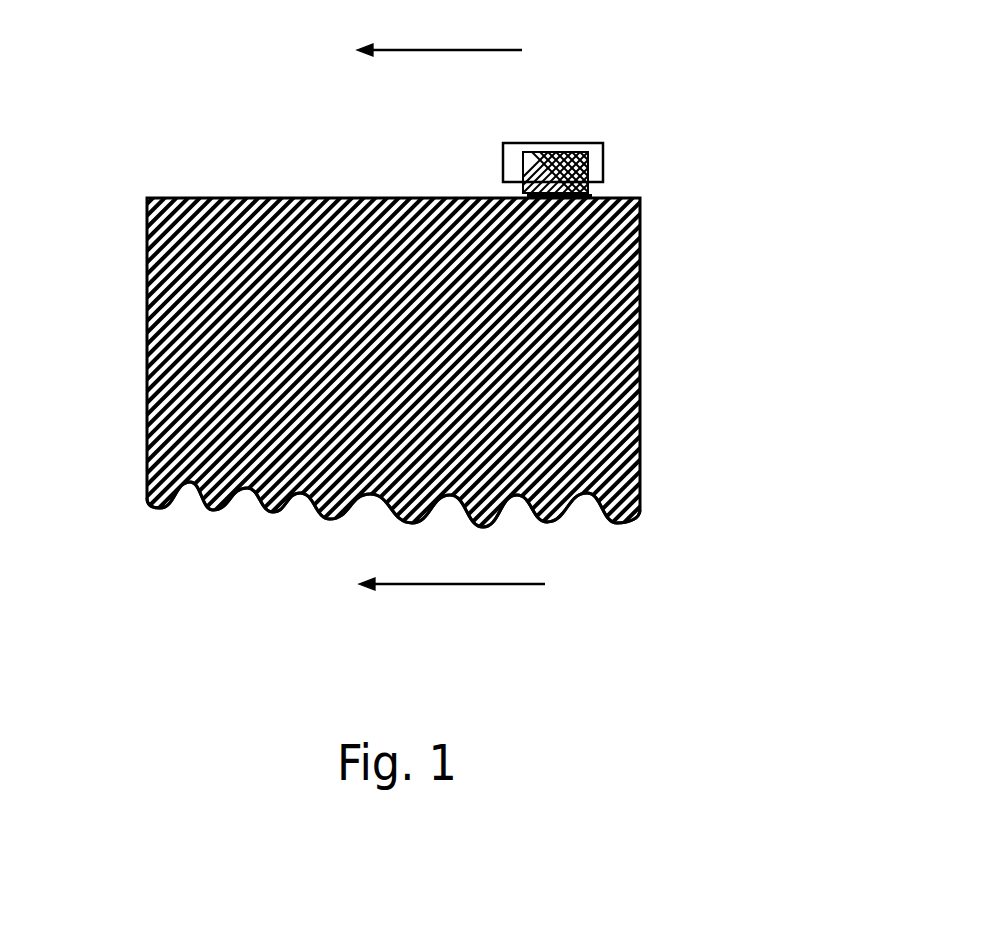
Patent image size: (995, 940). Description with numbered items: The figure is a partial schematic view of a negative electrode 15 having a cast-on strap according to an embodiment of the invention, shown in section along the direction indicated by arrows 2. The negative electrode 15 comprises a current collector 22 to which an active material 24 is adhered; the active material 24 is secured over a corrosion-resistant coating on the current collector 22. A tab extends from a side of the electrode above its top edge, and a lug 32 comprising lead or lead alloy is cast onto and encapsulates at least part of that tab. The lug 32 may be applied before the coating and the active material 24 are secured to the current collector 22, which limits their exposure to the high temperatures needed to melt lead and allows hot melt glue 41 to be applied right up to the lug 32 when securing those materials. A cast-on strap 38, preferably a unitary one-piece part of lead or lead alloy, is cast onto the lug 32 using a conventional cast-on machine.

The section line / viewing direction 2 is at (451, 302).
The negative electrode 15 is at (697, 300).
The current collector 22 is at (240, 492).
The active material 24 is at (193, 278).
The lug 32 is at (580, 163).
The cast-on strap 38 is at (593, 143).
The hot melt glue 41 is at (593, 195).